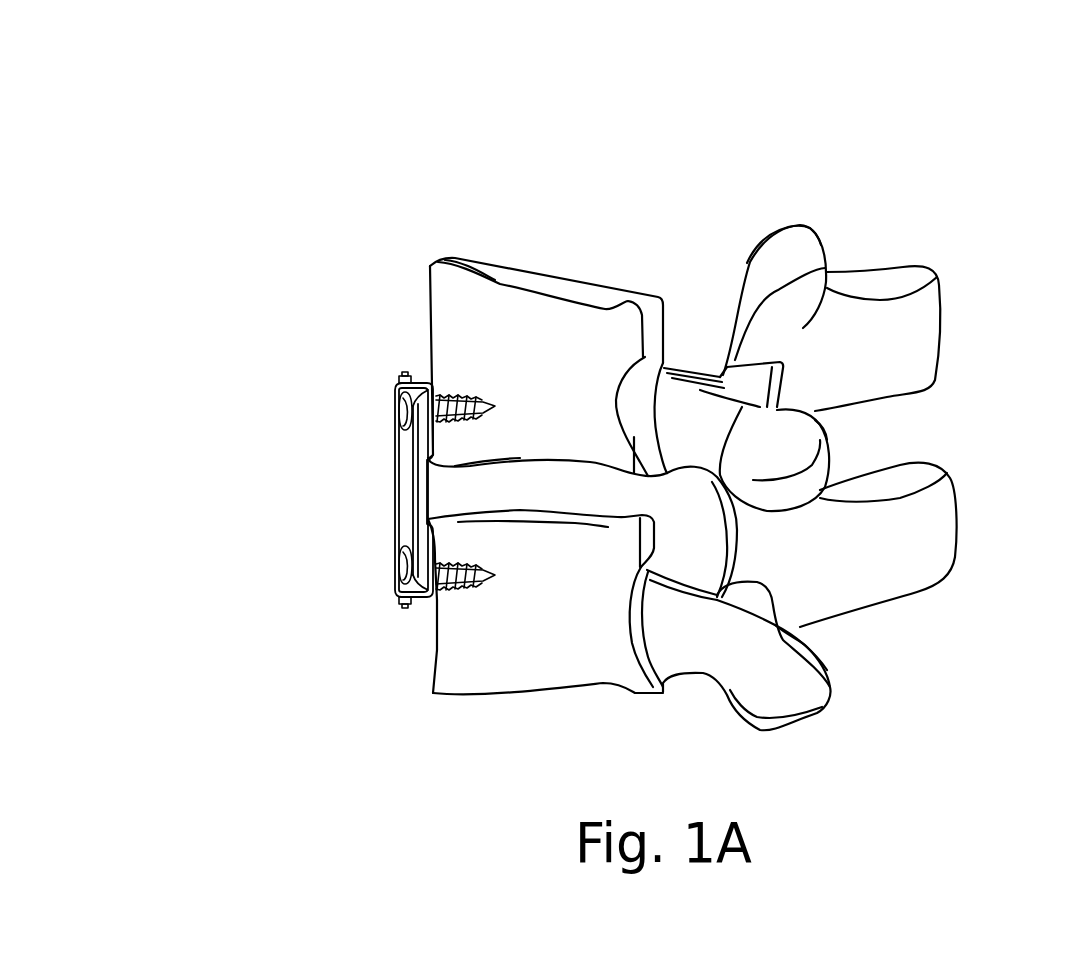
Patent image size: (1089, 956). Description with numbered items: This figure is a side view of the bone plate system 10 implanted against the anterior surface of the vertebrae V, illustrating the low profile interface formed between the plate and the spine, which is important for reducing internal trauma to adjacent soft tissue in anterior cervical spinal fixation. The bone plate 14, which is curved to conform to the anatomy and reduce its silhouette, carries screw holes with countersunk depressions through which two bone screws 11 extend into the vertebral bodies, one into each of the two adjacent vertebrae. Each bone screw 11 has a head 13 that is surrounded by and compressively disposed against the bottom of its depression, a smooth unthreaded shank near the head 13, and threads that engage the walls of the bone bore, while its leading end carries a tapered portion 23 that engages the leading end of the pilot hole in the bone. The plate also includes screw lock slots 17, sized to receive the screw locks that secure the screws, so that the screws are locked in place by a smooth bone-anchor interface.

The bone plate system 10 is at (332, 418).
The bone screw 11 is at (462, 400).
The head 13 is at (397, 402).
The bone plate 14 is at (395, 468).
The screw lock slot 17 is at (402, 374).
The tapered portion 23 is at (437, 588).
The vertebrae V is at (920, 650).